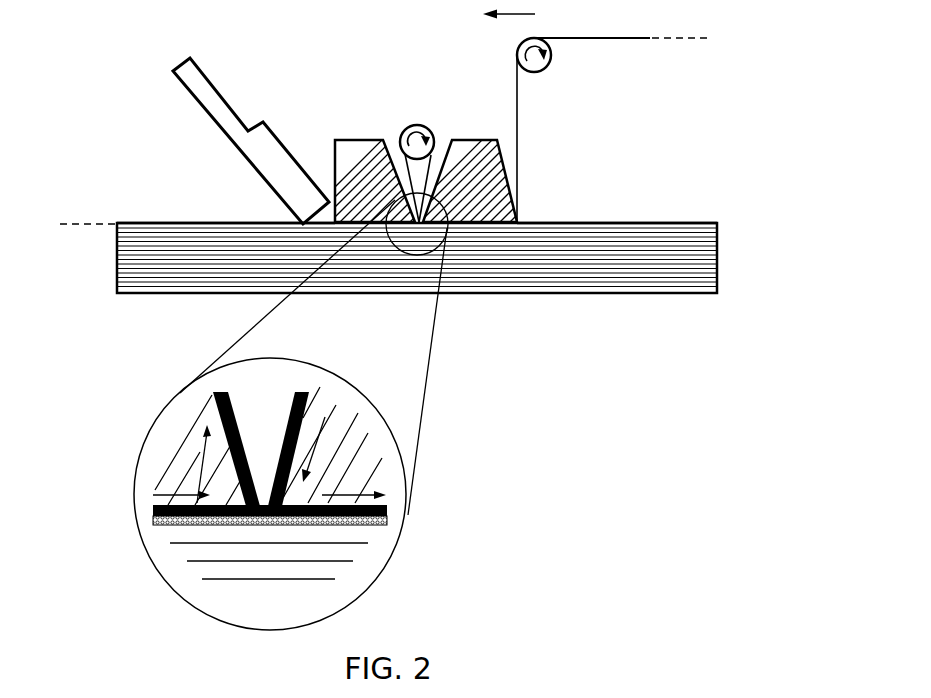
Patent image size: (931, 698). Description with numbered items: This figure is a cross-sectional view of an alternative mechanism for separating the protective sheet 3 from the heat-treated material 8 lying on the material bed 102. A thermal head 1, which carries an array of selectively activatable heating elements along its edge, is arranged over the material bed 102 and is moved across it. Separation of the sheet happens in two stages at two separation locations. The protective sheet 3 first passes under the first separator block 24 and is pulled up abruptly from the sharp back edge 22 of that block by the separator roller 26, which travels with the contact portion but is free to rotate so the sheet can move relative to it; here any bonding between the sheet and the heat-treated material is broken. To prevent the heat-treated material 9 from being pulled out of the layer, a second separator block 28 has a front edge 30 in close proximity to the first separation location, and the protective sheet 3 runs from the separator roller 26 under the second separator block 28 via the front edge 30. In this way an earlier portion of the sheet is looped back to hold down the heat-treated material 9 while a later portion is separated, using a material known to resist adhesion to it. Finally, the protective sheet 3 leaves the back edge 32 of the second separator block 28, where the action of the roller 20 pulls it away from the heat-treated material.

The thermal head 1 is at (222, 112).
The protective sheet 3 is at (158, 224).
The material bed 102 is at (117, 268).
The first separator block 24 is at (362, 158).
The separator roller 26 is at (423, 124).
The second separator block 28 is at (470, 152).
The roller 20 is at (543, 68).
The back edge 32 is at (520, 220).
The heat-treated material 8 is at (608, 222).
The heat-treated material 9 is at (162, 527).
The sharp back edge 22 is at (258, 518).
The front edge 30 is at (267, 518).